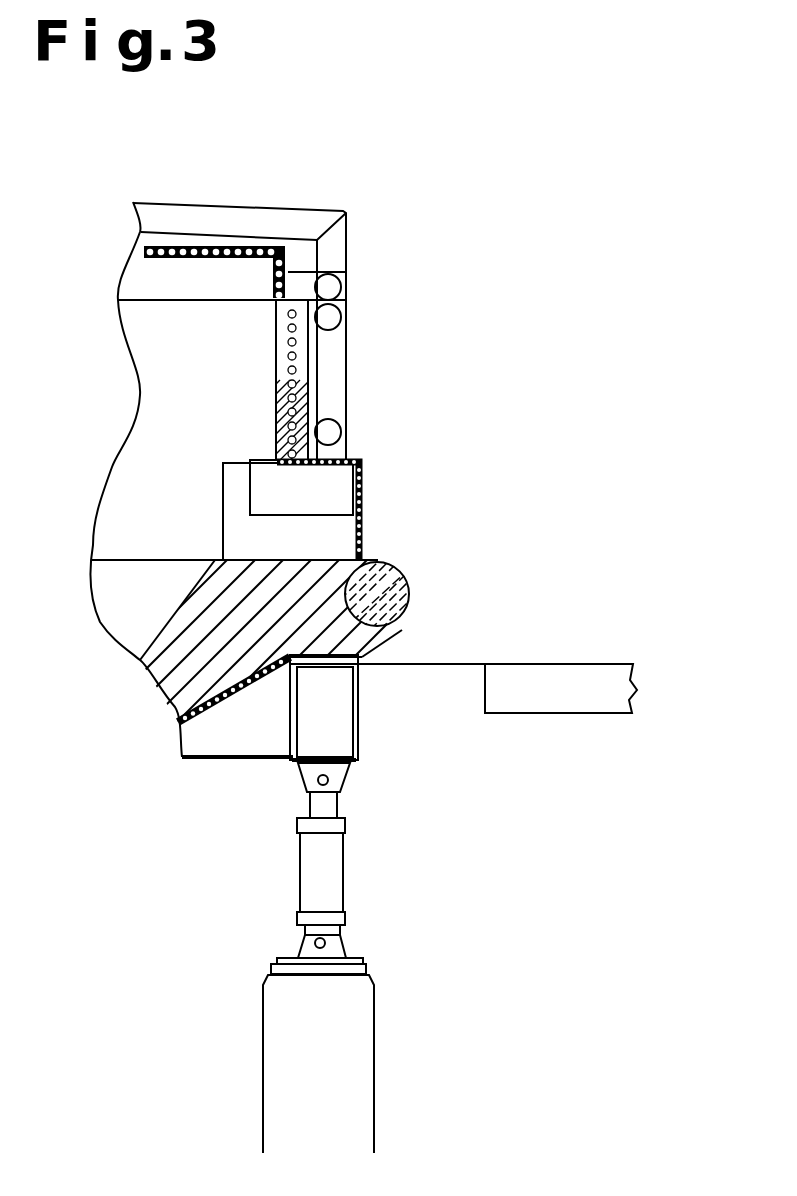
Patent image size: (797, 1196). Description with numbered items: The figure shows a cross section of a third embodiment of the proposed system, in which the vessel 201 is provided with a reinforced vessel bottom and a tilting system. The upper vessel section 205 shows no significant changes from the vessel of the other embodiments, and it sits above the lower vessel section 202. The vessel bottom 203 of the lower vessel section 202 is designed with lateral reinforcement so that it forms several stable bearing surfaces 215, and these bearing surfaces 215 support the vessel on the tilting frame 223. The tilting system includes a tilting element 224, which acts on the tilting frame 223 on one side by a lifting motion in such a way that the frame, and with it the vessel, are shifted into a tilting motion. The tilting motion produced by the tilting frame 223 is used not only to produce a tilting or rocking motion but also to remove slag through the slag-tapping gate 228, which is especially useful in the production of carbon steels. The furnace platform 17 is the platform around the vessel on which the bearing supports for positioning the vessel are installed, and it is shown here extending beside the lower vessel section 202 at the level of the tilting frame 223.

The vessel 201 is at (470, 172).
The upper vessel section 205 is at (372, 230).
The slag-tapping gate 228 is at (365, 508).
The lower vessel section 202 is at (426, 611).
The vessel bottom 203 is at (197, 664).
The furnace platform 17 is at (582, 675).
The bearing surfaces 215 is at (332, 681).
The tilting frame 223 is at (335, 718).
The tilting element 224 is at (330, 855).